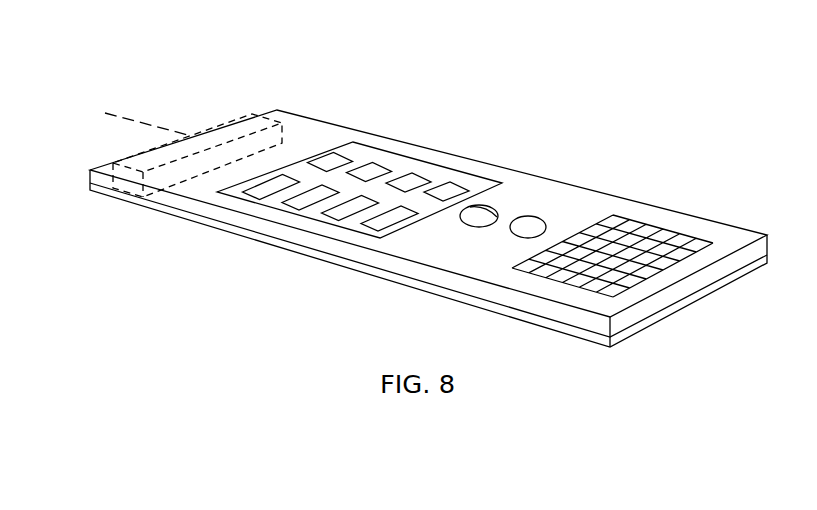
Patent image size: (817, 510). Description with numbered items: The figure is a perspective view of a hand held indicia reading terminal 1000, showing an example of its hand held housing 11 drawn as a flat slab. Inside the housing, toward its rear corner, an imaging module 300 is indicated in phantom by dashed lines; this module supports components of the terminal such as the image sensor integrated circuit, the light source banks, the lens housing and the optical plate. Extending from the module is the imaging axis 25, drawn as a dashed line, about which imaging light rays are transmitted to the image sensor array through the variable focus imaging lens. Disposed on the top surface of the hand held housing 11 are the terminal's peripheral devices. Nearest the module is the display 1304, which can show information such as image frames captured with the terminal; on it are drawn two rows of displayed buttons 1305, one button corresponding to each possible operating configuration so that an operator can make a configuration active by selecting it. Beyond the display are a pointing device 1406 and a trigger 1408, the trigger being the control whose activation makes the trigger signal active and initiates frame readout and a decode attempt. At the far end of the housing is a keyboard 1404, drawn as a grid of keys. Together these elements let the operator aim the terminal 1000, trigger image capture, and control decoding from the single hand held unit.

The hand held housing 11 is at (740, 237).
The imaging axis 25 is at (133, 118).
The imaging module 300 is at (237, 128).
The indicia reading terminal 1000 is at (358, 79).
The display 1304 is at (344, 202).
The displayed button 1305 is at (313, 205).
The keyboard 1404 is at (655, 226).
The pointing device 1406 is at (498, 208).
The trigger 1408 is at (547, 220).